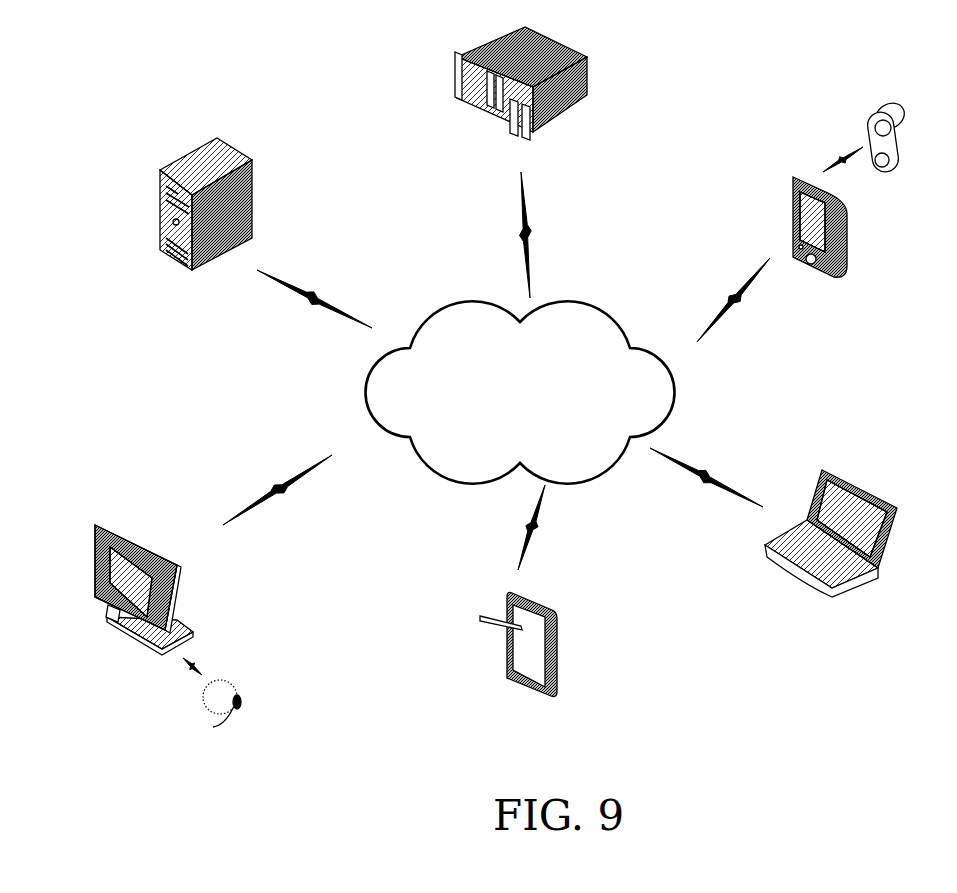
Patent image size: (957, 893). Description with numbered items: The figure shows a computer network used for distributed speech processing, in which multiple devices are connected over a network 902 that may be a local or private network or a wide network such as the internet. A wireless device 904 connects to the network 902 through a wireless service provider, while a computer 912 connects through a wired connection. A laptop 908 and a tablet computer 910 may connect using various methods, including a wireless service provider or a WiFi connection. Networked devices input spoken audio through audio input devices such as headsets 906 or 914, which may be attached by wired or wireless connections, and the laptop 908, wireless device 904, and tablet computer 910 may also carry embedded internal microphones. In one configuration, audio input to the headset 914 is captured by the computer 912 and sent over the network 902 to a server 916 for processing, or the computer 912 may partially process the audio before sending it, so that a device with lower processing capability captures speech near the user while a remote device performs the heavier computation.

The network 902 is at (568, 300).
The wireless device 904 is at (847, 213).
The headset 906 is at (888, 103).
The laptop 908 is at (838, 472).
The tablet computer 910 is at (552, 612).
The computer 912 is at (143, 538).
The headset 914 is at (240, 153).
The server 916 is at (585, 57).